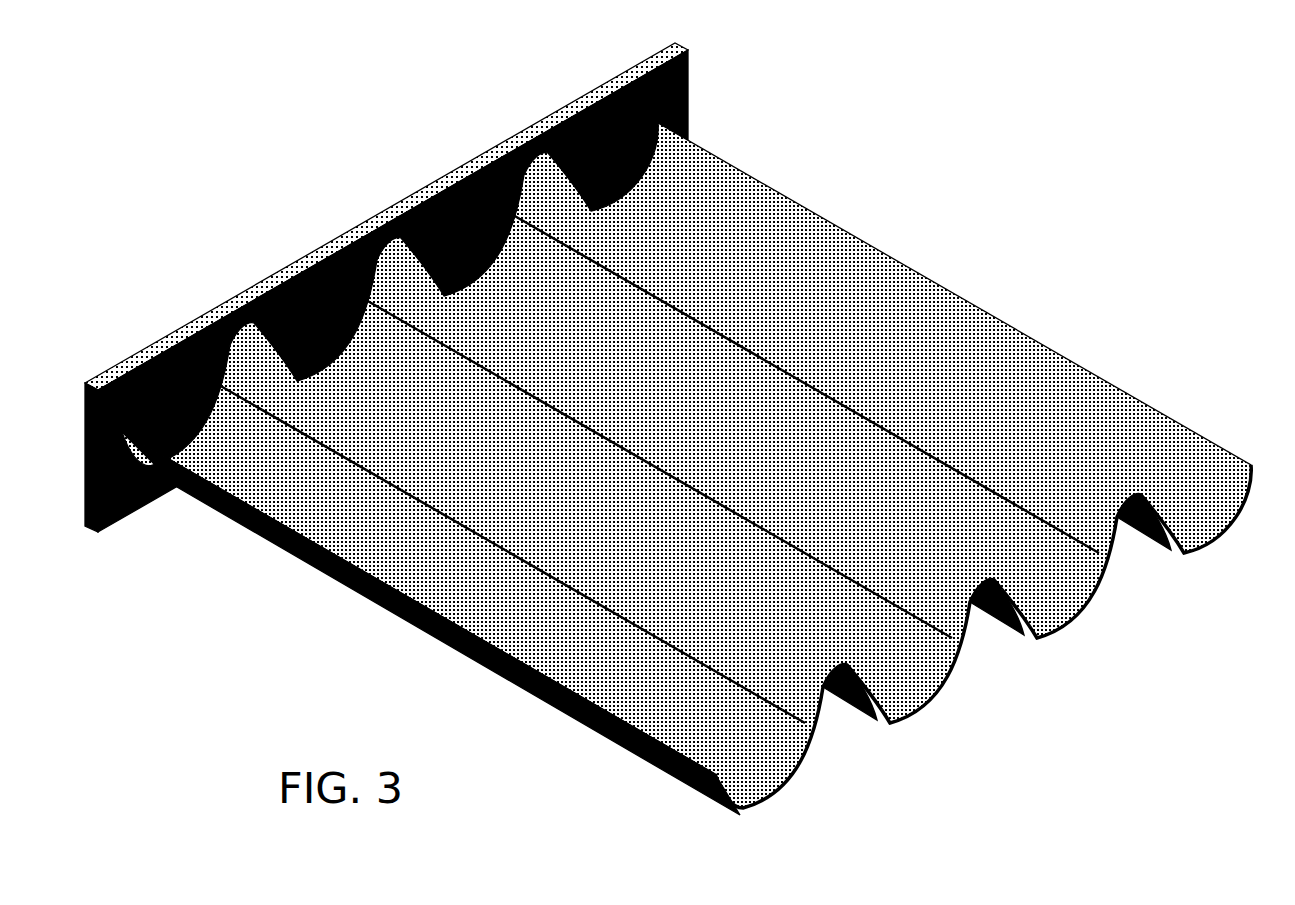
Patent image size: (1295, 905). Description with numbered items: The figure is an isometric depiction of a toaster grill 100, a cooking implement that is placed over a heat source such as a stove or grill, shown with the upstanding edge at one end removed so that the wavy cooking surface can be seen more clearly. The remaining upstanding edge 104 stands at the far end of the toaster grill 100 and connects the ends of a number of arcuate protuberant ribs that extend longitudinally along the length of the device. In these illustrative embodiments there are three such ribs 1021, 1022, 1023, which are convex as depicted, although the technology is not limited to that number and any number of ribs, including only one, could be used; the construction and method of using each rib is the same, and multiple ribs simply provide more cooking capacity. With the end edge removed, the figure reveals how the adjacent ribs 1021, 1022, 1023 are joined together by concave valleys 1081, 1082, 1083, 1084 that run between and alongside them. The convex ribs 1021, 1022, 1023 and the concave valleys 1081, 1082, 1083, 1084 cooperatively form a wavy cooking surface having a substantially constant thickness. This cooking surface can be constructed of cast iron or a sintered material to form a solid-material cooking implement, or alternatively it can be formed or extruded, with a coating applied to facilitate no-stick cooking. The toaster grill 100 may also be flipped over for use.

The toaster grill 100 is at (1046, 231).
The rib 1021 is at (255, 355).
The rib 1022 is at (400, 268).
The rib 1023 is at (556, 174).
The upstanding edge 104 is at (288, 263).
The concave valley 1081 is at (763, 780).
The concave valley 1082 is at (913, 692).
The concave valley 1083 is at (1048, 610).
The concave valley 1084 is at (1202, 532).